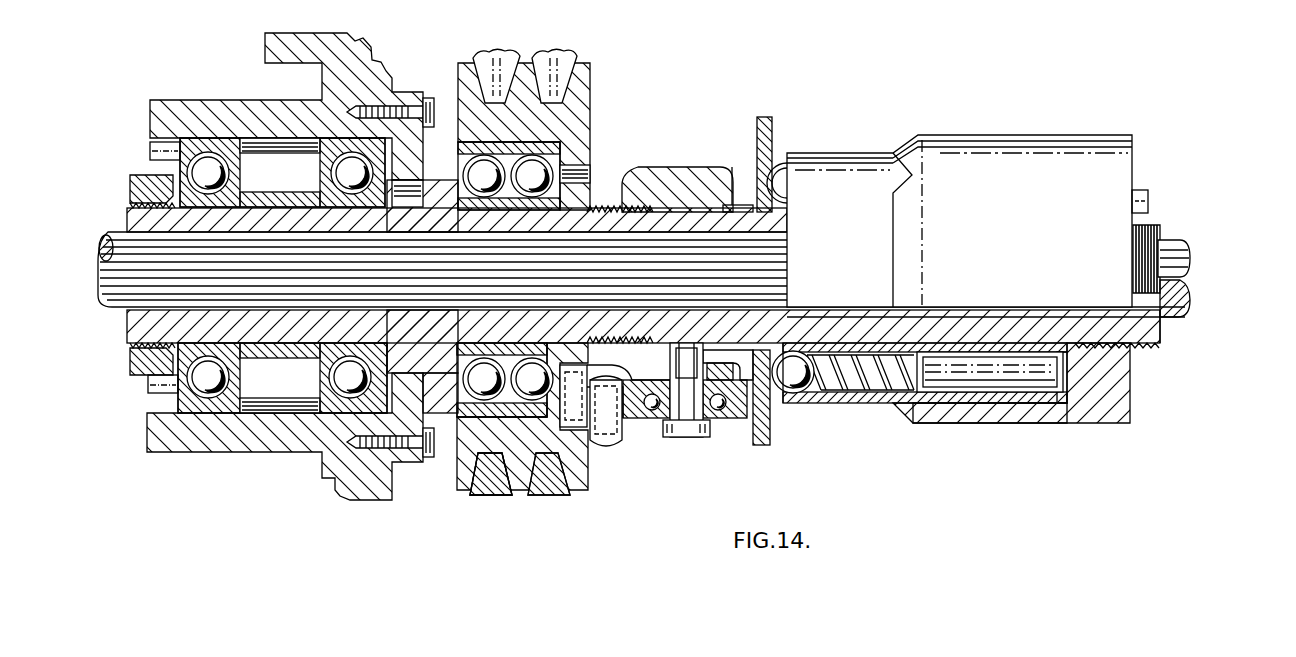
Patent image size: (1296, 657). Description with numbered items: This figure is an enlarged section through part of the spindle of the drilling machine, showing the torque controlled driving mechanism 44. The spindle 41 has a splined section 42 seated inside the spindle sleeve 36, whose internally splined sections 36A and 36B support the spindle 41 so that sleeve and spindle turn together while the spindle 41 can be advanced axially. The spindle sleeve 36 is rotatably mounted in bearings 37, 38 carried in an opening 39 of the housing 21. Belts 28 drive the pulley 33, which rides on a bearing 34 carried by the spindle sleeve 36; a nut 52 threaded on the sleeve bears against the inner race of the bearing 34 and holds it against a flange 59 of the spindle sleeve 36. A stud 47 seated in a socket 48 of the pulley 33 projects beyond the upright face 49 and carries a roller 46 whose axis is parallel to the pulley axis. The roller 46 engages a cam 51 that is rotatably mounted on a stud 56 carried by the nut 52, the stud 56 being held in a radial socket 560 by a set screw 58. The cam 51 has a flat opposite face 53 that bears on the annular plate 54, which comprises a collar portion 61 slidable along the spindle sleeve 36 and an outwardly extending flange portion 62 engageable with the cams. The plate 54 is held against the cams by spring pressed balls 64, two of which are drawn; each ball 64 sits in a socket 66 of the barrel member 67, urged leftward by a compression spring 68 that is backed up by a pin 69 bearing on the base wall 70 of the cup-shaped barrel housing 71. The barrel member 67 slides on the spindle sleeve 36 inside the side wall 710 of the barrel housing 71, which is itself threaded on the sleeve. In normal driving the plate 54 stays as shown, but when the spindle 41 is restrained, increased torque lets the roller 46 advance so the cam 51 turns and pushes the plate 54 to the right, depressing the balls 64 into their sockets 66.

The housing 21 is at (350, 499).
The belts 28 is at (513, 497).
The pulley 33 is at (587, 73).
The bearing 34 is at (448, 400).
The spindle sleeve 36 is at (120, 318).
The internally splined section 36A is at (193, 312).
The internally splined section 36B is at (1133, 322).
The bearing 37 is at (178, 382).
The bearing 38 is at (318, 398).
The opening 39 is at (243, 413).
The spindle 41 is at (1193, 257).
The splined section 42 is at (128, 245).
The torque controlled driving mechanism 44 is at (853, 412).
The roller 46 is at (623, 440).
The stud 47 is at (594, 445).
The socket 48 is at (490, 492).
The upright face 49 is at (590, 478).
The cam 51 is at (760, 442).
The nut 52 is at (670, 178).
The flat opposite face 53 is at (782, 442).
The plate 54 is at (793, 424).
The stud 56 is at (733, 425).
The set screw 58 is at (714, 354).
The flange 59 is at (448, 188).
The radial socket 560 is at (690, 437).
The collar portion 61 is at (742, 207).
The flange portion 62 is at (768, 118).
The ball 64 is at (780, 160).
The socket 66 is at (962, 390).
The barrel member 67 is at (970, 344).
The compression spring 68 is at (903, 352).
The pin 69 is at (1048, 362).
The base wall 70 is at (1052, 413).
The barrel housing 71 is at (1118, 392).
The side wall 710 is at (990, 415).